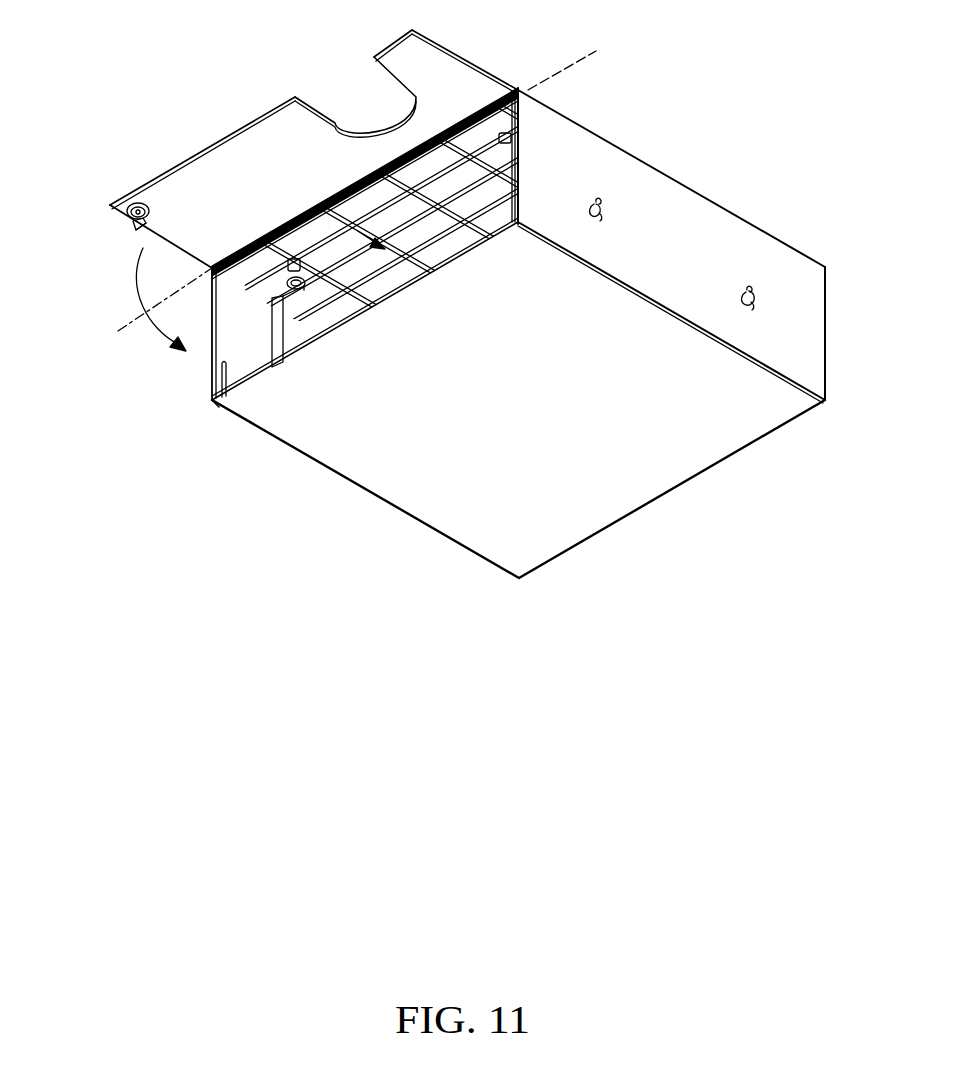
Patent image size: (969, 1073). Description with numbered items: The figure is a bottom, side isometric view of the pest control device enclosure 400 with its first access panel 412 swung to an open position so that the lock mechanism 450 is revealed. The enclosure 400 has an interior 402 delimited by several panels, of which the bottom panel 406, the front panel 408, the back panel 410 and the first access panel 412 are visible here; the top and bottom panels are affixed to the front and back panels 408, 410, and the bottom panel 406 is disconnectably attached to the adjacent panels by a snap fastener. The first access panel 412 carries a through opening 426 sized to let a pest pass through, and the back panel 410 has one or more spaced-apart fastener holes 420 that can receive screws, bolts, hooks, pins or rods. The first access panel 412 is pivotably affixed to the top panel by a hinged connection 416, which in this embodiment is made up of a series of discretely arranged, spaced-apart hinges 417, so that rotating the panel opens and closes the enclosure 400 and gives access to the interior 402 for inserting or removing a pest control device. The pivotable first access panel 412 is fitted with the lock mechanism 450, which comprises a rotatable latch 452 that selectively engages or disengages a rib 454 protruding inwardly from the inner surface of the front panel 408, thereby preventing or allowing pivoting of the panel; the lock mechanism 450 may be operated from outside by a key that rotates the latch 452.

The pest control device enclosure 400 is at (706, 100).
The interior 402 is at (316, 208).
The bottom panel 406 is at (405, 470).
The front panel 408 is at (210, 352).
The back panel 410 is at (688, 243).
The first access panel 412 is at (186, 185).
The hinged connection 416 is at (437, 124).
The hinges 417 is at (495, 100).
The fastener holes 420 is at (764, 296).
The through opening 426 is at (351, 87).
The lock mechanism 450 is at (112, 211).
The rotatable latch 452 is at (134, 228).
The rib 454 is at (222, 378).